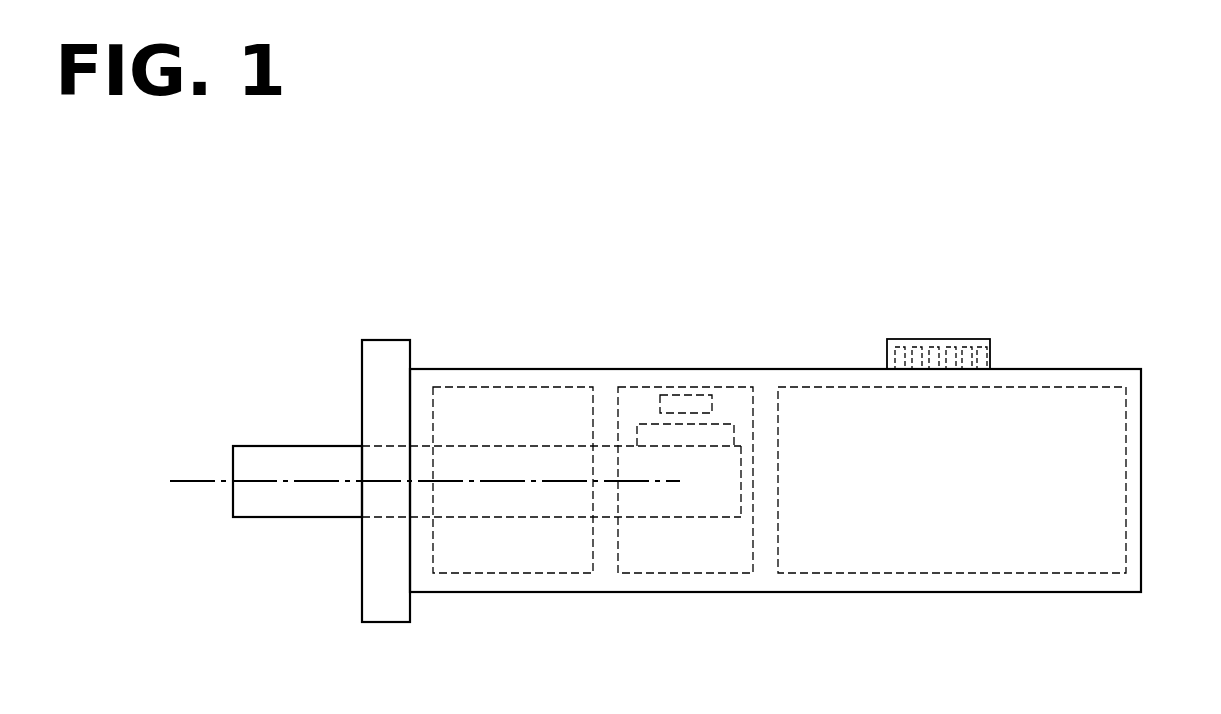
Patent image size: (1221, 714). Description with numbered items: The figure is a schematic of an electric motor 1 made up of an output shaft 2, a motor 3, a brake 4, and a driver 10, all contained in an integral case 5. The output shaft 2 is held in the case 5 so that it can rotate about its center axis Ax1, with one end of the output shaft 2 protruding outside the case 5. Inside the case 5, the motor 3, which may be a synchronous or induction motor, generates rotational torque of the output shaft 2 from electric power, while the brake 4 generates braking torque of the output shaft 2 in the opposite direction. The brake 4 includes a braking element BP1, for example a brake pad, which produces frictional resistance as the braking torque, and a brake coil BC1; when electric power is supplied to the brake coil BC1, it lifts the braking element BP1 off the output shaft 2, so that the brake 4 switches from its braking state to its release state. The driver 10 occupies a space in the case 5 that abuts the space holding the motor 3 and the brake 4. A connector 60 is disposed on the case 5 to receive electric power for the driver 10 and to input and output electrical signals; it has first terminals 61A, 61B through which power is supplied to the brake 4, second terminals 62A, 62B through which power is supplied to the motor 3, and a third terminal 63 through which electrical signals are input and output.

The electric motor 1 is at (755, 222).
The output shaft 2 is at (296, 446).
The motor 3 is at (515, 386).
The brake 4 is at (696, 386).
The case 5 is at (1141, 369).
The driver 10 is at (1097, 388).
The connector 60 is at (990, 340).
The first terminal 61A is at (897, 340).
The first terminal 61B is at (912, 340).
The second terminal 62A is at (937, 340).
The second terminal 62B is at (960, 340).
The third terminal 63 is at (978, 340).
The brake coil BC1 is at (657, 410).
The braking element BP1 is at (727, 424).
The center axis Ax1 is at (195, 485).